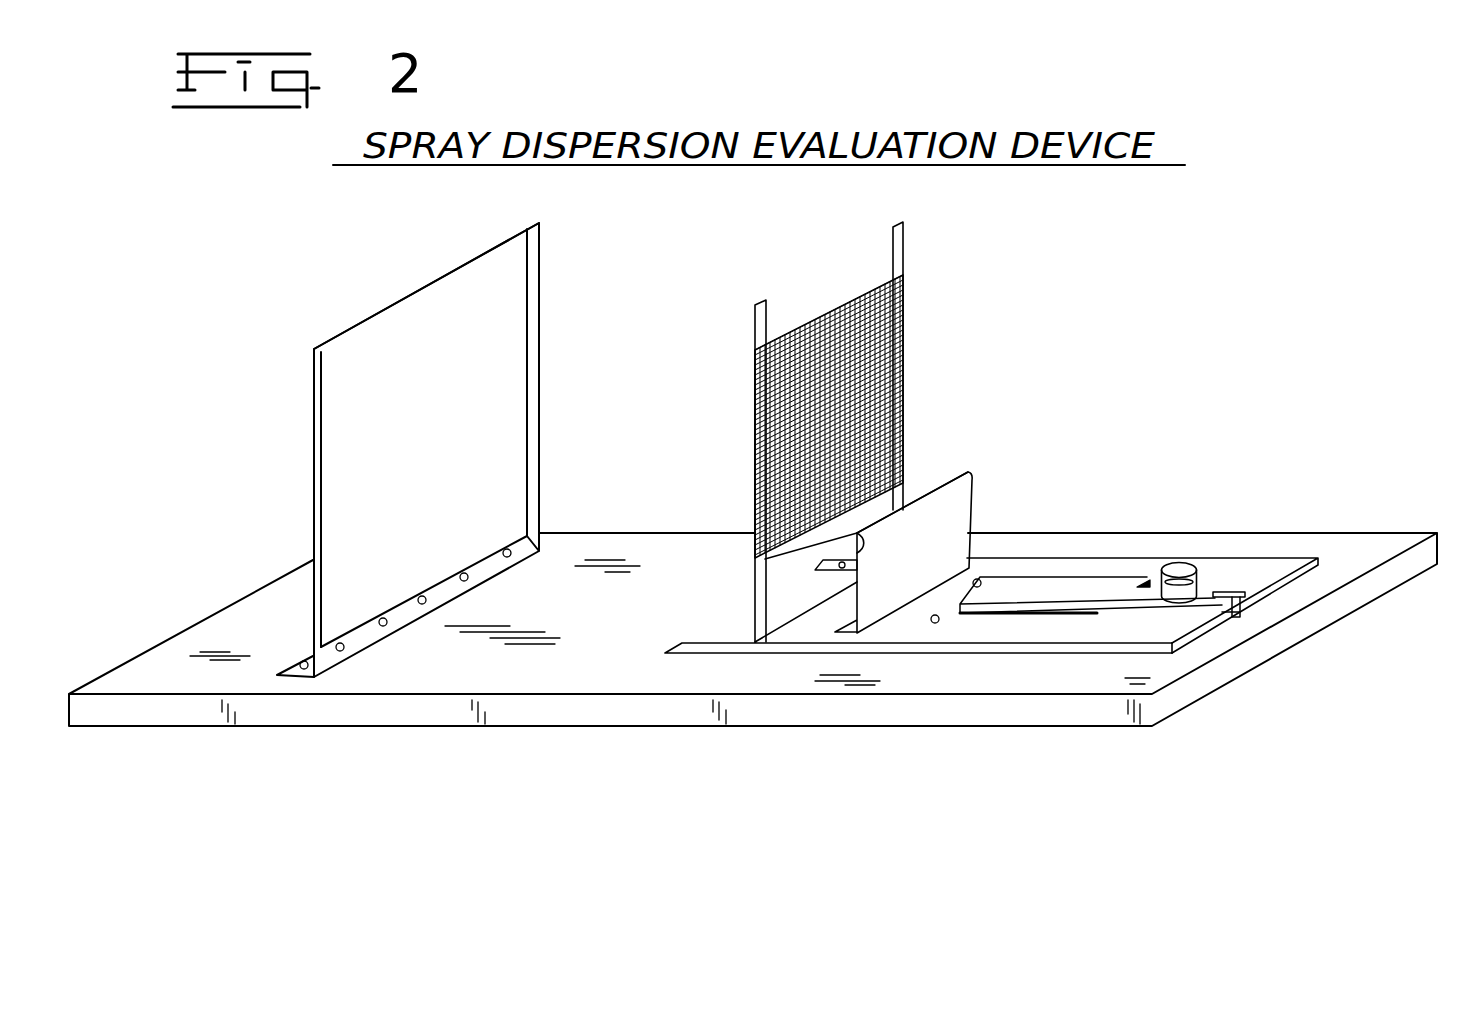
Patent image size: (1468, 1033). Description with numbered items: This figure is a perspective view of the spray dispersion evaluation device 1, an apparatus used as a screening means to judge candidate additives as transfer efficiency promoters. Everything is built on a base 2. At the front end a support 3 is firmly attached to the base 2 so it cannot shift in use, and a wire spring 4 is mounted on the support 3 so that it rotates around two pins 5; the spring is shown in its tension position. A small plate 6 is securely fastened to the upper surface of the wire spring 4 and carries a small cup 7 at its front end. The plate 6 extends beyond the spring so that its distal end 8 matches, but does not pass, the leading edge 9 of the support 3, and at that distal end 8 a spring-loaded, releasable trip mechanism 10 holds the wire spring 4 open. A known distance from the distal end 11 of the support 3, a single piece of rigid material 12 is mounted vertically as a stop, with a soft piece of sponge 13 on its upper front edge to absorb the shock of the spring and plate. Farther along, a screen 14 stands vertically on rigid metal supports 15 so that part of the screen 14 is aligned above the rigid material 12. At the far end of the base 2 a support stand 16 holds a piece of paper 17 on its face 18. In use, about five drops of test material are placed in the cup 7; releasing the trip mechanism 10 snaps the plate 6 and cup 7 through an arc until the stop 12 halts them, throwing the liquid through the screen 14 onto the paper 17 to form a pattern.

The spray dispersion evaluation device 1 is at (1168, 328).
The base 2 is at (877, 707).
The support 3 is at (1257, 567).
The wire spring 4 is at (1063, 577).
The pins 5 is at (977, 580).
The small plate 6 is at (1107, 597).
The small cup 7 is at (1193, 562).
The distal end 8 is at (1225, 615).
The leading edge 9 is at (1190, 637).
The trip mechanism 10 is at (1243, 606).
The distal end 11 is at (805, 612).
The rigid material 12 is at (952, 530).
The sponge 13 is at (973, 473).
The screen 14 is at (905, 370).
The metal supports 15 is at (904, 233).
The support stand 16 is at (541, 287).
The paper 17 is at (392, 339).
The face 18 is at (528, 479).